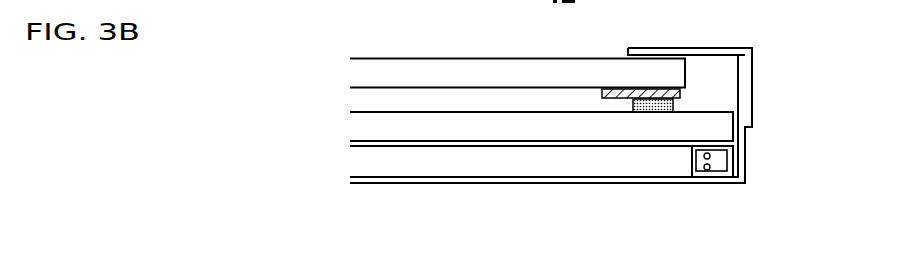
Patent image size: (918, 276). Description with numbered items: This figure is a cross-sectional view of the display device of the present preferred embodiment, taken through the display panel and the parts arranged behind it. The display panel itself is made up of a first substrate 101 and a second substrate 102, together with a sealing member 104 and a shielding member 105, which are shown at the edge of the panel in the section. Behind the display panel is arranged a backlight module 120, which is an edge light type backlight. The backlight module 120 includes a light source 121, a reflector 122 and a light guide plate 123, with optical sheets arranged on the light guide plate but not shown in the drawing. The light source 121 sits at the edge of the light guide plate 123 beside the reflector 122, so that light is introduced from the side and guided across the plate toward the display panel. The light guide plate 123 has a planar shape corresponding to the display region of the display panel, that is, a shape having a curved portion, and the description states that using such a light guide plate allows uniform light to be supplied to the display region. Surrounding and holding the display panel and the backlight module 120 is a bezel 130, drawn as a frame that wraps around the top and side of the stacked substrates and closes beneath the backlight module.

The first substrate 101 is at (357, 128).
The second substrate 102 is at (355, 75).
The sealing member 104 is at (670, 105).
The shielding member 105 is at (683, 96).
The backlight module 120 is at (341, 163).
The light source 121 is at (709, 158).
The reflector 122 is at (733, 162).
The light guide plate 123 is at (584, 172).
The bezel 130 is at (693, 53).